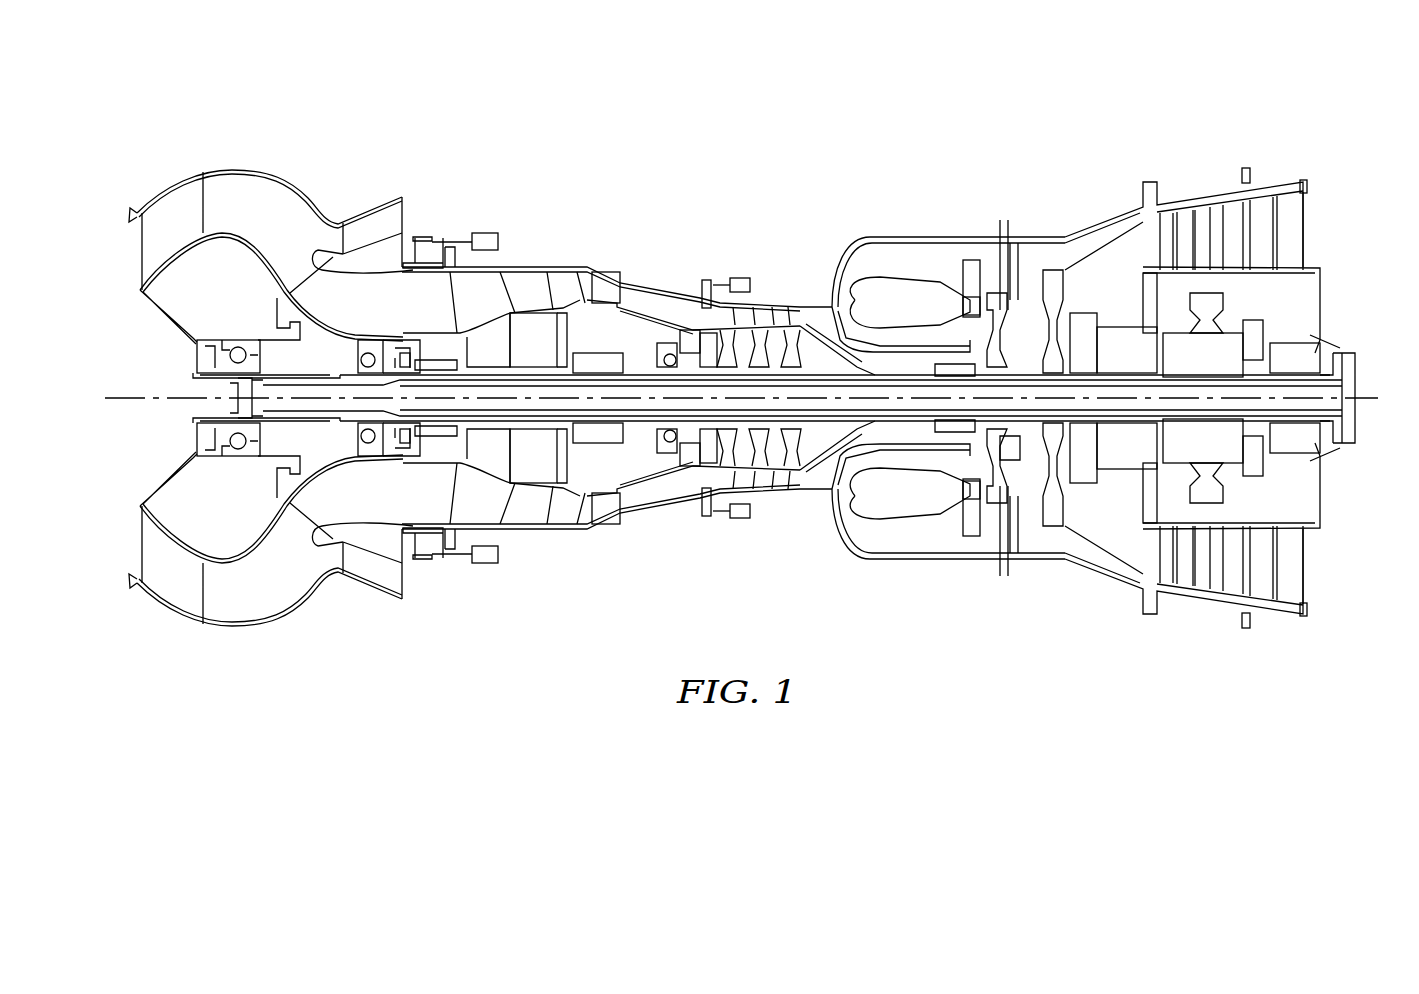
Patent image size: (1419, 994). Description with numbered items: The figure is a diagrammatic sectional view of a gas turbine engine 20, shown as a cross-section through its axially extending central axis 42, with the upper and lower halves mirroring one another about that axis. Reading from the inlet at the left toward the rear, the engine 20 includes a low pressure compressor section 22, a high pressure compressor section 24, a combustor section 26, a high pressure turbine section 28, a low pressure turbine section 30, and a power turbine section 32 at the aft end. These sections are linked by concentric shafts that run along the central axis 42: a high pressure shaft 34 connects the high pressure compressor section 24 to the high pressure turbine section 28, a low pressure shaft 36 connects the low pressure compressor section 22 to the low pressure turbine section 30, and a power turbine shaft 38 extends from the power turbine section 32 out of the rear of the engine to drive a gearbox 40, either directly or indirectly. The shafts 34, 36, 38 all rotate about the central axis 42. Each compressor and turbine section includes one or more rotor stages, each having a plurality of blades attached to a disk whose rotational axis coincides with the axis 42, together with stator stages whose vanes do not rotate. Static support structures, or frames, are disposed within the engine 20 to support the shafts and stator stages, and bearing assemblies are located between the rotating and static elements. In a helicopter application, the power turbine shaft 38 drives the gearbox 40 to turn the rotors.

The gas turbine engine 20 is at (860, 112).
The low pressure compressor section 22 is at (456, 210).
The high pressure compressor section 24 is at (702, 542).
The combustor section 26 is at (862, 232).
The high pressure turbine section 28 is at (972, 300).
The low pressure turbine section 30 is at (1056, 278).
The power turbine section 32 is at (1194, 153).
The high pressure shaft 34 is at (950, 422).
The low pressure shaft 36 is at (1008, 443).
The power turbine shaft 38 is at (1333, 390).
The gearbox 40 is at (510, 208).
The central axis 42 is at (122, 393).